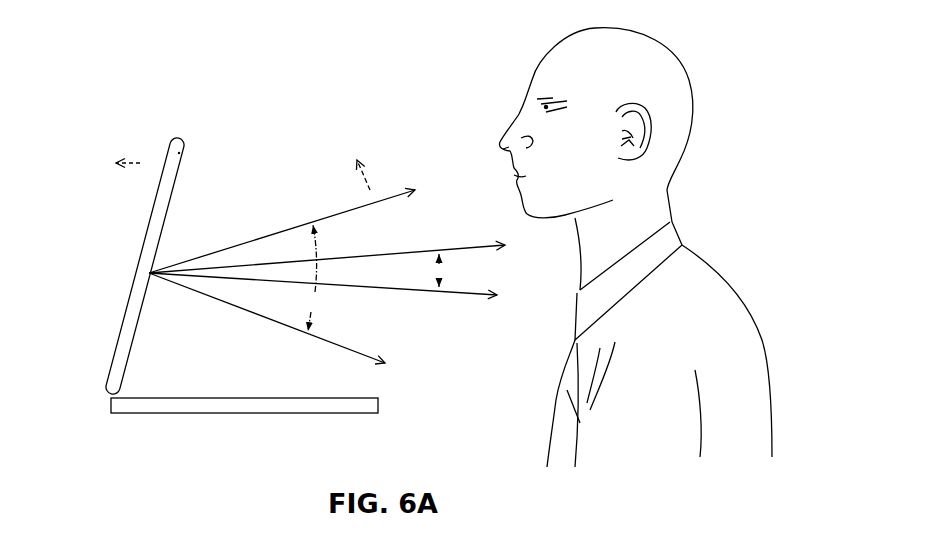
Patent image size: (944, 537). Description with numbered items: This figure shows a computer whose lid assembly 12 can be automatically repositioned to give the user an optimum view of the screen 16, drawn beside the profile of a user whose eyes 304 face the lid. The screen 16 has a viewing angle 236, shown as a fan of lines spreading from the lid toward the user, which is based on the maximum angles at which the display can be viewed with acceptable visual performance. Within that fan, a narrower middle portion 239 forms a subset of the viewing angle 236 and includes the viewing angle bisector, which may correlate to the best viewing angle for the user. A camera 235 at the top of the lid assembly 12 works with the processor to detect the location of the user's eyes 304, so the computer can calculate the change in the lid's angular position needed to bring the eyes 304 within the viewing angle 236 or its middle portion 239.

The lid assembly 12 is at (242, 255).
The screen 16 is at (175, 214).
The camera 235 is at (182, 153).
The viewing angle 236 is at (327, 261).
The middle portion 239 is at (439, 270).
The user's eyes 304 is at (541, 105).